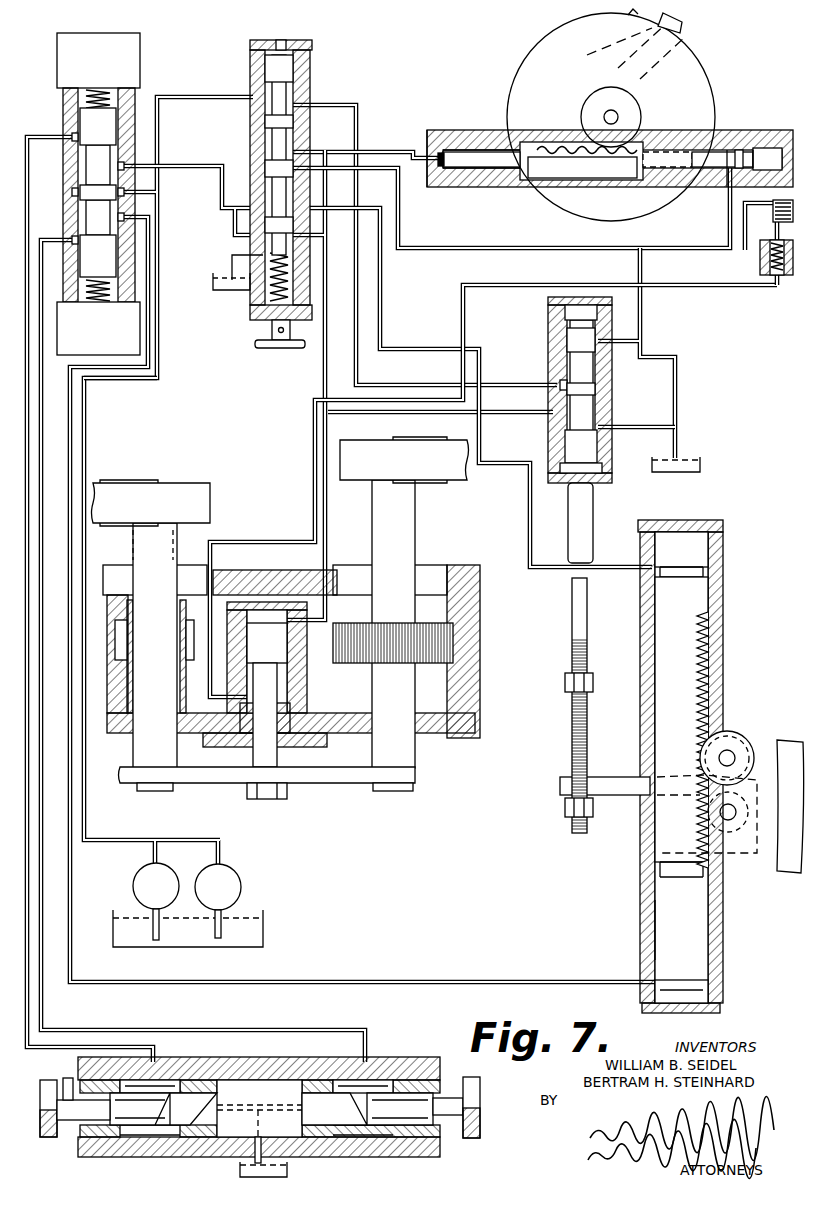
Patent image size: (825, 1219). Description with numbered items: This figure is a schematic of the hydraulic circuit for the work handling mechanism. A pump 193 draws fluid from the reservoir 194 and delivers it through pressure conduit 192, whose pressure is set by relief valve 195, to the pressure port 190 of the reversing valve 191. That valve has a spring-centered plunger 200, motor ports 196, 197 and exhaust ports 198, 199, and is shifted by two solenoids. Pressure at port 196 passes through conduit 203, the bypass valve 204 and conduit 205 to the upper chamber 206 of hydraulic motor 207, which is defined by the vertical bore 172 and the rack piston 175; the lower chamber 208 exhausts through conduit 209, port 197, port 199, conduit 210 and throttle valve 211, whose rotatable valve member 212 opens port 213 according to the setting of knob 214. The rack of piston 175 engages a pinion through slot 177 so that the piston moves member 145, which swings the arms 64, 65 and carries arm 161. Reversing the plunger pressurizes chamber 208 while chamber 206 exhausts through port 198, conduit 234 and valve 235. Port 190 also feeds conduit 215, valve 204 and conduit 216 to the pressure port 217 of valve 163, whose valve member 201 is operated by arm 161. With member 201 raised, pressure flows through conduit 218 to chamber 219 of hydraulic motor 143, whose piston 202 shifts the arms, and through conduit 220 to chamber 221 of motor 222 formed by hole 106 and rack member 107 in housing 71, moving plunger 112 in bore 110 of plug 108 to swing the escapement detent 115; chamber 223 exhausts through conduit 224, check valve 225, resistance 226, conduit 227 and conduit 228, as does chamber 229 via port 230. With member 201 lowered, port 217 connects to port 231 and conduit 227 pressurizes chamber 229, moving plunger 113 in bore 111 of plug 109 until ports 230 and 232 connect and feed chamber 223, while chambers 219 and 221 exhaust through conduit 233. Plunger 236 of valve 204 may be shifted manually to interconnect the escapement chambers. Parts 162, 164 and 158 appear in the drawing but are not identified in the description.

The reversing valve 191 is at (62, 108).
The exhaust port 198 is at (72, 136).
The exhaust port 199 is at (72, 239).
The plunger 200 is at (114, 276).
The motor port 196 is at (126, 165).
The conduit 203 is at (196, 166).
The pressure port 190 is at (126, 192).
The motor port 197 is at (126, 220).
The conduit 215 is at (190, 96).
The pressure conduit 192 is at (160, 378).
The conduit 210 is at (42, 565).
The bypass valve 204 is at (300, 63).
The plunger 236 is at (291, 76).
The conduit 216 is at (358, 122).
The conduit 220 is at (322, 372).
The conduit 205 is at (396, 349).
The conduit 218 is at (410, 414).
The chamber 221 is at (445, 150).
The plug 108 is at (476, 135).
The rack member 107 is at (548, 144).
The hole 106 is at (666, 128).
The bore 111 is at (748, 148).
The plug 109 is at (763, 148).
The plunger 113 is at (740, 148).
The chamber 229 is at (772, 148).
The bore 110 is at (441, 181).
The hydraulic motor 222 is at (485, 190).
The plunger 112 is at (482, 163).
The housing 71 is at (585, 222).
The escapement detent 115 is at (683, 27).
The port 232 is at (738, 186).
The port 230 is at (738, 210).
The resistance 226 is at (772, 214).
The conduit 227 is at (682, 250).
The check valve 225 is at (776, 282).
The pressure port 217 is at (552, 386).
The port 231 is at (600, 374).
The conduit 233 is at (642, 416).
The conduit 228 is at (680, 384).
The valve member 201 is at (575, 448).
The valve 163 is at (606, 455).
The reservoir 194 is at (701, 470).
The arm 64 is at (141, 485).
The arm 65 is at (438, 466).
The conduit 224 is at (264, 541).
The chamber 219 is at (285, 600).
The piston 202 is at (282, 648).
The chamber 223 is at (280, 688).
The hydraulic motor 143 is at (305, 696).
The upper chamber 206 is at (708, 576).
The rack piston 175 is at (706, 619).
The slot 177 is at (727, 731).
The member 145 is at (786, 738).
The nut 164 is at (565, 680).
The threaded rod 162 is at (572, 755).
The arm 161 is at (616, 797).
The gear 158 is at (745, 845).
The vertical bore 172 is at (720, 906).
The pump 193 is at (133, 886).
The relief valve 195 is at (242, 888).
The hydraulic motor 207 is at (642, 925).
The conduit 209 is at (478, 980).
The lower chamber 208 is at (710, 962).
The conduit 234 is at (30, 1040).
The valve 235 is at (222, 1064).
The port 213 is at (372, 1092).
The throttle valve 211 is at (392, 1060).
The knob 214 is at (481, 1104).
The rotatable valve member 212 is at (362, 1125).